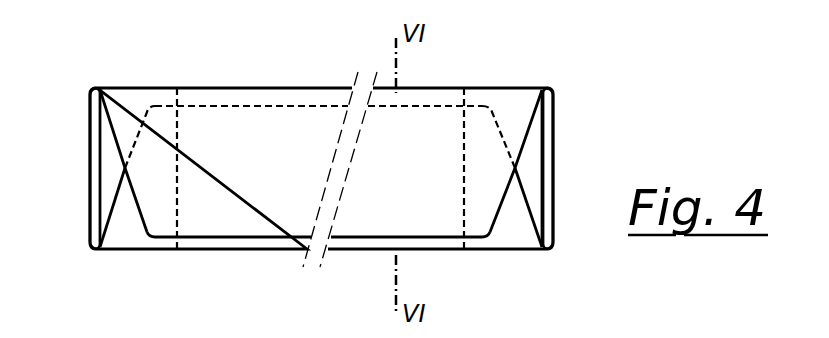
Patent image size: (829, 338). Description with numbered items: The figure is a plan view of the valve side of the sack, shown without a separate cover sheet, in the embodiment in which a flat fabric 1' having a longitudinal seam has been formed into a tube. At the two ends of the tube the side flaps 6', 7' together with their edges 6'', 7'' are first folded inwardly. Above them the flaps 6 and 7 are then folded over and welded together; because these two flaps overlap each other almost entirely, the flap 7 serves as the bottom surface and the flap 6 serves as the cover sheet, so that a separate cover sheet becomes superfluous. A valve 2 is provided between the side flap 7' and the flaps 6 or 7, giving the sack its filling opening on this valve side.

The flat fabric 1' is at (321, 134).
The valve 2 is at (103, 189).
The flap 6 is at (511, 126).
The side flap 6' is at (575, 168).
The edge of side flap 6'' is at (435, 168).
The flap 7 is at (512, 193).
The side flap 7' is at (98, 168).
The edge of side flap 7'' is at (210, 168).